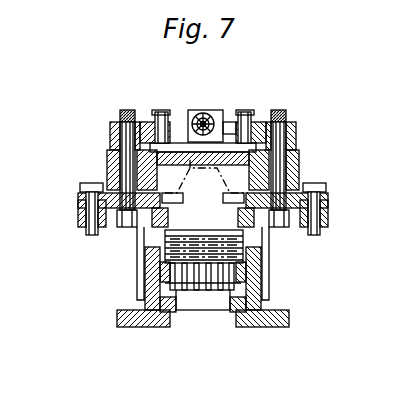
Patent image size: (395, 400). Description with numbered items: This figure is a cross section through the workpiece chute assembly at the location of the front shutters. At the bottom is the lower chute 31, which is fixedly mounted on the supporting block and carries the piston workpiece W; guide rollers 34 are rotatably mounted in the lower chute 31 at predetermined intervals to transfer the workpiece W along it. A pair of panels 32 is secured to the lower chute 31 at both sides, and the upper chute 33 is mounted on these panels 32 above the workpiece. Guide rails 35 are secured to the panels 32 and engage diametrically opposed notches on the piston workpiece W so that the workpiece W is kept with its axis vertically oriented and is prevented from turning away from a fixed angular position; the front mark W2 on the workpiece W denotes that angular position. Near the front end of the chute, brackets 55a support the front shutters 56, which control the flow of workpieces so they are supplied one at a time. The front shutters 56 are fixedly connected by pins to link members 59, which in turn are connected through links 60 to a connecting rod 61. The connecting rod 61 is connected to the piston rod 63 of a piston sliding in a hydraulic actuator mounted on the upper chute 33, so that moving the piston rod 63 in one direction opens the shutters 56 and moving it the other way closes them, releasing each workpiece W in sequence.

The lower chute 31 is at (165, 328).
The panels 32 is at (137, 272).
The upper chute 33 is at (183, 148).
The guide rollers 34 is at (220, 292).
The guide rails 35 is at (150, 215).
The brackets 55a is at (108, 170).
The front shutters 56 is at (84, 215).
The link members 59 is at (112, 130).
The links 60 is at (133, 110).
The connecting rod 61 is at (224, 128).
The piston rod 63 is at (204, 113).
The piston workpiece W is at (208, 222).
The front mark W2 is at (244, 265).